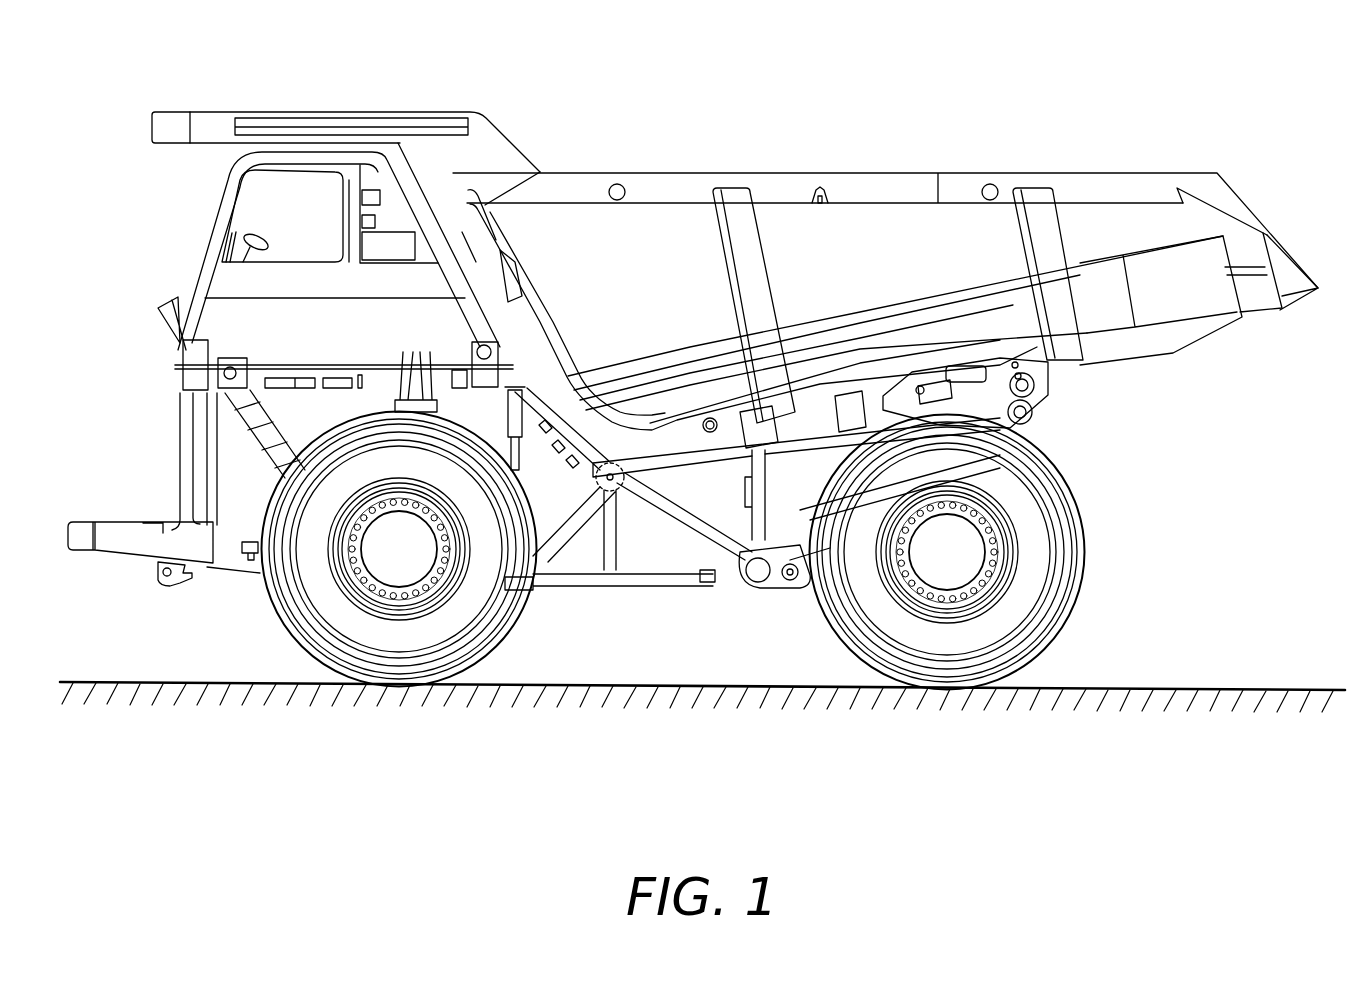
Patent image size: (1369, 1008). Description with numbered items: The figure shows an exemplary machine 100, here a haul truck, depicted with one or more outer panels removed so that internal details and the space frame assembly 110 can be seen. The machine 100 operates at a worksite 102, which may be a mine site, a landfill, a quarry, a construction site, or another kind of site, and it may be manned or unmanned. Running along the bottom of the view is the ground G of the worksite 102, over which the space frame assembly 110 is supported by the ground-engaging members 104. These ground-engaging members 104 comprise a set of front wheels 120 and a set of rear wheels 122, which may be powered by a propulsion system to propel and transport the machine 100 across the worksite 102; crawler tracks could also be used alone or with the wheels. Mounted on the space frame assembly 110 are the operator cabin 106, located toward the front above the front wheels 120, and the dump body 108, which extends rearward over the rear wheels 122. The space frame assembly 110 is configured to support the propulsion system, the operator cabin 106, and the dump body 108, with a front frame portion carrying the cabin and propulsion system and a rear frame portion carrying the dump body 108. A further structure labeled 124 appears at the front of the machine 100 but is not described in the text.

The machine 100 is at (850, 56).
The worksite 102 is at (1297, 688).
The ground-engaging members 104 is at (683, 551).
The operator cabin 106 is at (224, 178).
The dump body 108 is at (992, 172).
The space frame assembly 110 is at (668, 586).
The front wheels 120 is at (290, 643).
The rear wheels 122 is at (1077, 493).
The front frame structure 124 is at (294, 418).
The ground G is at (1207, 689).